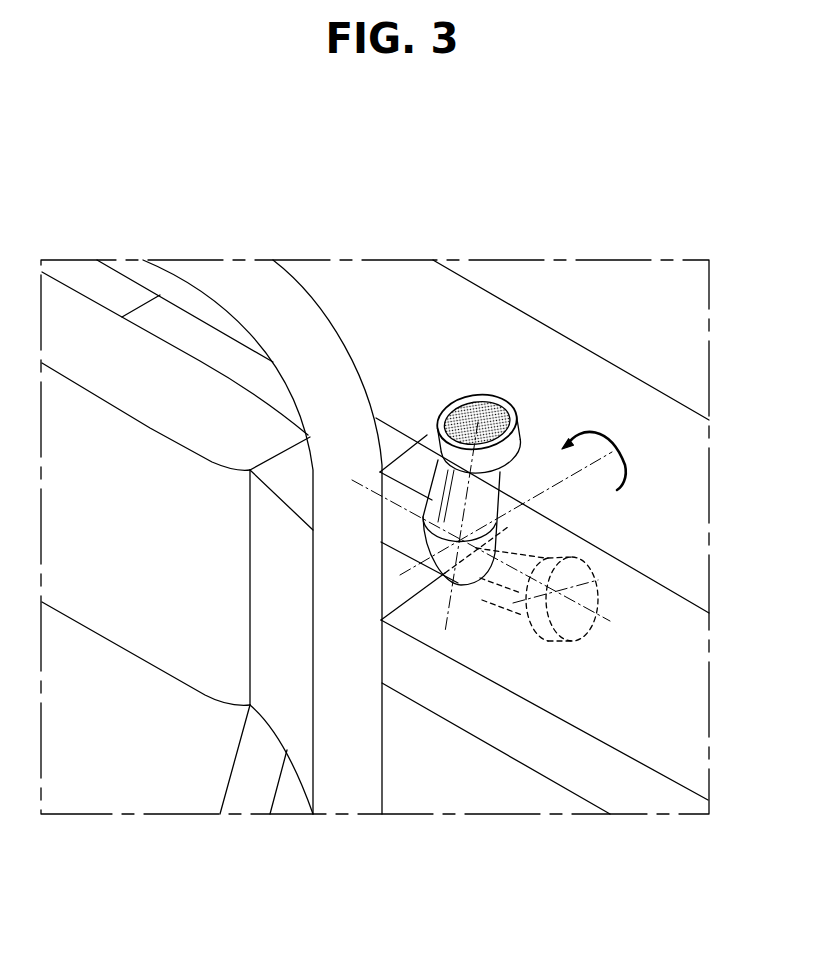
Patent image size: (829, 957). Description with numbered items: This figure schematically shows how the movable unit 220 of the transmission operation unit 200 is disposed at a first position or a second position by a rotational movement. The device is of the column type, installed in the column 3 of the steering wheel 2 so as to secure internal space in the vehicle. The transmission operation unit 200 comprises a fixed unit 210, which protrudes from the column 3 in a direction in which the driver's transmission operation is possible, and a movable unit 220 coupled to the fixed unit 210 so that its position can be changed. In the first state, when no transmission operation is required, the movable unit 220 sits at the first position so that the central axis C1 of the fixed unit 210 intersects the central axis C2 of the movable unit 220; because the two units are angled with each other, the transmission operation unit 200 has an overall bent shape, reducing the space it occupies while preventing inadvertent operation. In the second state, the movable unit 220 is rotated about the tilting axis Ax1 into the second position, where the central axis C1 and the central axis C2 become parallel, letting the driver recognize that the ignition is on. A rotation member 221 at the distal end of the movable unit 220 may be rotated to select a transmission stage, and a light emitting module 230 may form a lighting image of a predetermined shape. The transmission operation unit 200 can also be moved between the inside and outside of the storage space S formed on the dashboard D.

The steering wheel 2 is at (290, 300).
The column 3 is at (174, 325).
The transmission operation unit 200 is at (492, 624).
The fixed unit 210 is at (412, 560).
The movable unit 220 is at (468, 592).
The rotation member 221 is at (516, 448).
The light emitting module 230 is at (425, 470).
The central axis of the fixed unit C1 is at (598, 620).
The central axis of the movable unit C2 is at (467, 413).
The tilting axis Ax1 is at (537, 501).
The dashboard D is at (690, 487).
The storage space S is at (673, 670).